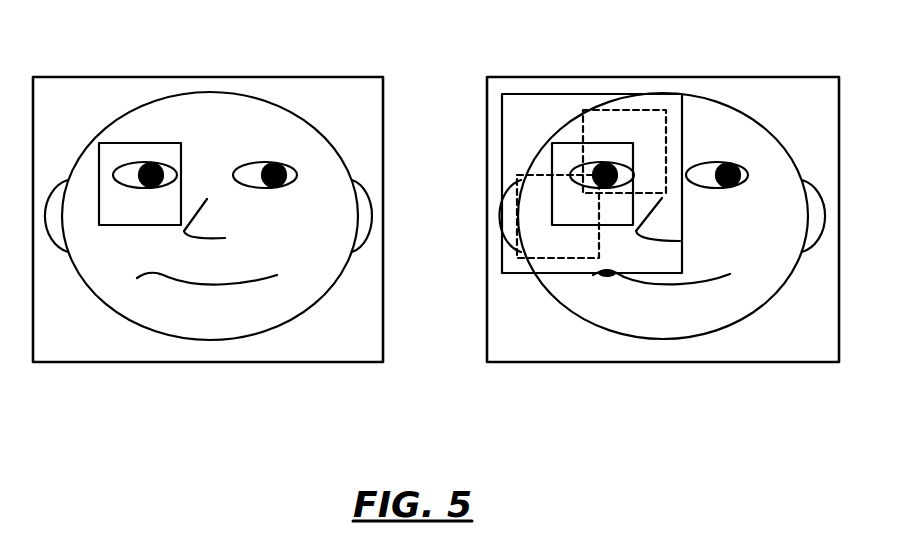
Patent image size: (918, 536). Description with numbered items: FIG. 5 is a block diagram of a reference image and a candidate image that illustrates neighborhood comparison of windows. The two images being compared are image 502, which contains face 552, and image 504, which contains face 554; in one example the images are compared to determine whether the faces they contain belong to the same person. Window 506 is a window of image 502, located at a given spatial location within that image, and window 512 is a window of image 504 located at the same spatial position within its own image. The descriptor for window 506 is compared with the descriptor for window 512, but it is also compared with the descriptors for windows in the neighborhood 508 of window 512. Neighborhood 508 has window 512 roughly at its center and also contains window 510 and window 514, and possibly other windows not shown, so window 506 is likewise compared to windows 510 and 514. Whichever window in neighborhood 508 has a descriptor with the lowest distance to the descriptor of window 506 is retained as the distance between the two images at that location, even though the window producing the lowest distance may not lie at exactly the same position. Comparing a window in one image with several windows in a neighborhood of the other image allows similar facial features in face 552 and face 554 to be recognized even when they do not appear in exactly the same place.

The image 502 is at (327, 77).
The image 504 is at (755, 77).
The window 506 is at (147, 143).
The neighborhood 508 is at (567, 94).
The window 510 is at (657, 110).
The window 512 is at (623, 225).
The window 514 is at (560, 258).
The face 552 is at (263, 315).
The face 554 is at (757, 290).